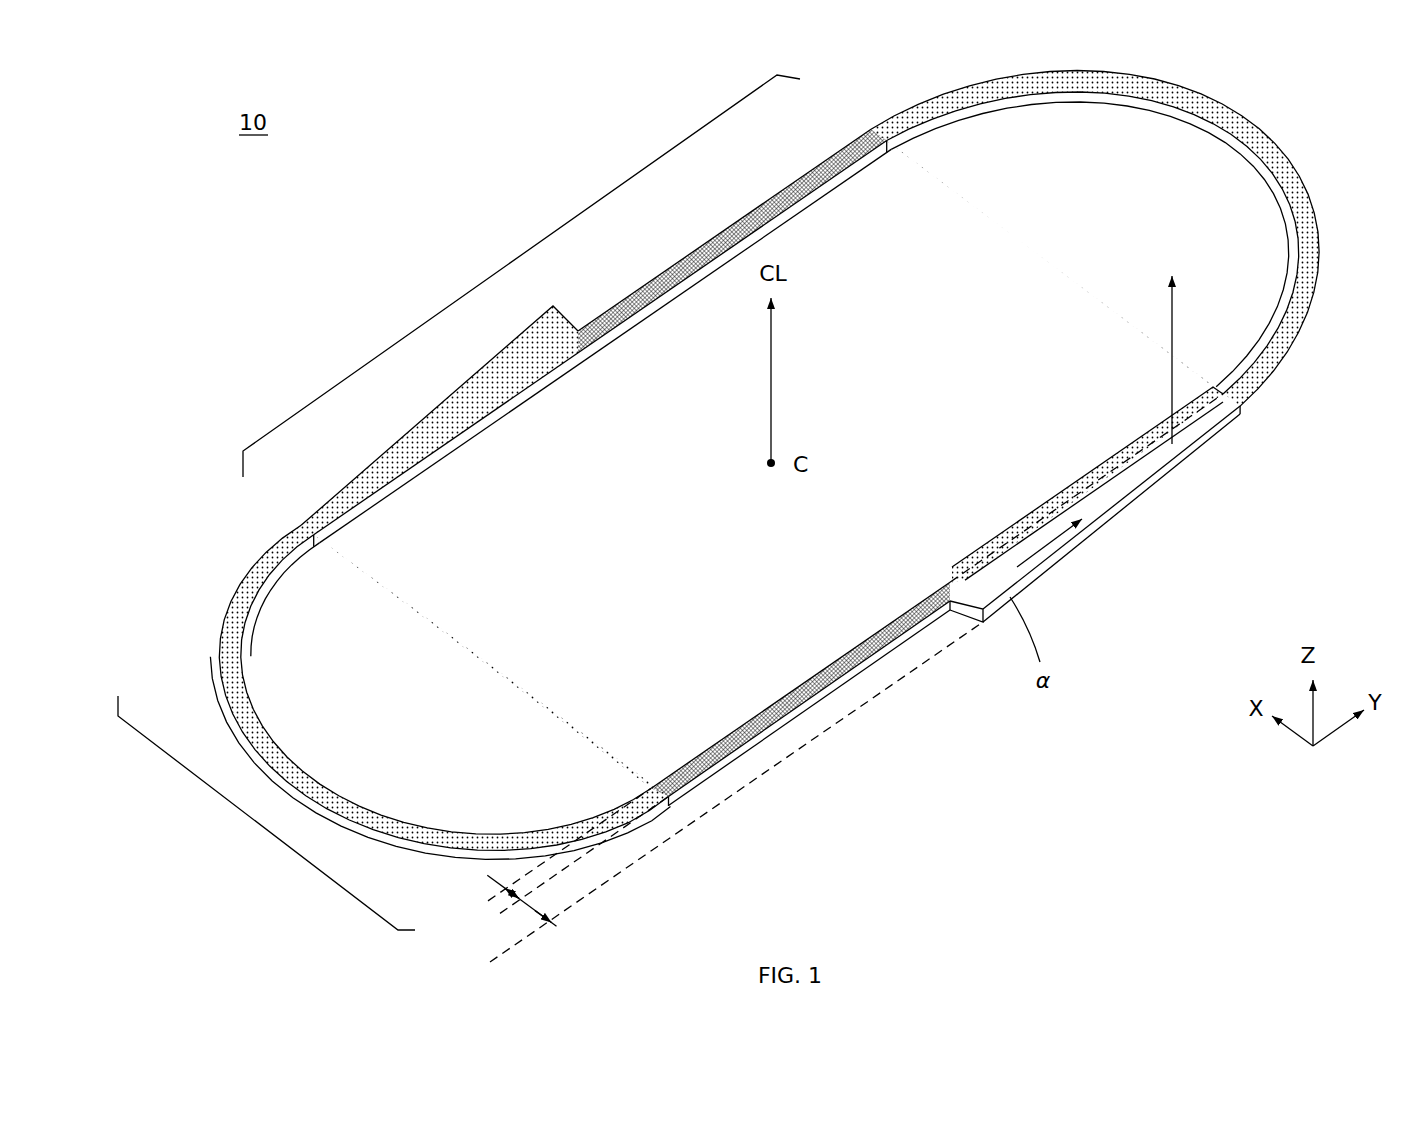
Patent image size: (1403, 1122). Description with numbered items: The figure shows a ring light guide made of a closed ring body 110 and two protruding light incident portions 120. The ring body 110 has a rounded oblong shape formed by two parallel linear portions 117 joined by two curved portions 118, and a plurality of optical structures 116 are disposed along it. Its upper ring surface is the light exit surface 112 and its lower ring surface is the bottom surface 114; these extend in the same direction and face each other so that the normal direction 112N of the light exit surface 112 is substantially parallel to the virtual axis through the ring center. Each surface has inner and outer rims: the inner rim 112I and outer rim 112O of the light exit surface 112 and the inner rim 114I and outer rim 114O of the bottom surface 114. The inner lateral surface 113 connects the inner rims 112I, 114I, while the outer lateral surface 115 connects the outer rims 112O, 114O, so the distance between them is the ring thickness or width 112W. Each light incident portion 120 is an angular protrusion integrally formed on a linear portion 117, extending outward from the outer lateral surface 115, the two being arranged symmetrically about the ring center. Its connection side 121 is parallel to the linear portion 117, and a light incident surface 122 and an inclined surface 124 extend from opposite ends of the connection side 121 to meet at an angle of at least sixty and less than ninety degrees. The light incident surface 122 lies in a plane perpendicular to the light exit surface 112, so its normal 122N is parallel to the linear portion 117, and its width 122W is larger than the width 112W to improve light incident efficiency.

The ring body 110 is at (1228, 100).
The light exit surface 112 is at (1113, 457).
The inner rim of the light exit surface 112I is at (873, 636).
The outer rim of the light exit surface 112O is at (870, 656).
The normal direction of the light exit surface 112N is at (1174, 344).
The width of the light exit surface 112W is at (551, 857).
The inner lateral surface 113 is at (988, 97).
The bottom surface 114 is at (828, 695).
The inner rim of the bottom surface 114I is at (582, 375).
The outer rim of the bottom surface 114O is at (765, 742).
The outer lateral surface 115 is at (708, 779).
The optical structures 116 is at (1317, 238).
The linear portions 117 is at (521, 276).
The curved portions 118 is at (266, 813).
The light incident portion 120 is at (542, 333).
The connection side 121 is at (1131, 473).
The light incident surface 122 is at (960, 614).
The normal to the light incident surface 122N is at (1037, 550).
The width of the light incident surface 122W is at (726, 792).
The inclined surface 124 is at (1184, 450).